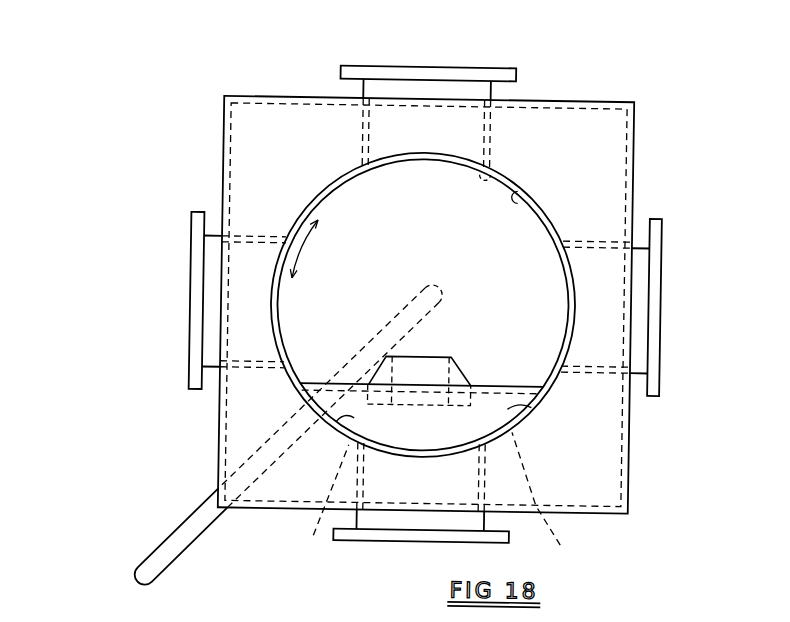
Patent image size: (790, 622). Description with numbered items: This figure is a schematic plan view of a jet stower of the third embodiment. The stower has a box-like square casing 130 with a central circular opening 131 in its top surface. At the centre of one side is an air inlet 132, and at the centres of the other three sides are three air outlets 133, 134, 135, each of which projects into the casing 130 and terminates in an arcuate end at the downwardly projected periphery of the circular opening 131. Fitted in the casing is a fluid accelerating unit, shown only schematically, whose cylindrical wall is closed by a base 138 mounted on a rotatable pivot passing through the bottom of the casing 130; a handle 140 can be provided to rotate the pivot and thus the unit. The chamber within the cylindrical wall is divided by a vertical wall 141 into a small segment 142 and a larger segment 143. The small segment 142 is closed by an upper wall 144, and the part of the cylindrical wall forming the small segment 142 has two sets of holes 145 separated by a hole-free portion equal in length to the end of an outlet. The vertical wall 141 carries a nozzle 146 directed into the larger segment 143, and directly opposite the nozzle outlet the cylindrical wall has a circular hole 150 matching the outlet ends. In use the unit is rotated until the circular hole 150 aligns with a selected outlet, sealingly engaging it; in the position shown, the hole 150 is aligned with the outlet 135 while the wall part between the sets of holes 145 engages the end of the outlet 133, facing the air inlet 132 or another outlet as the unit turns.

The casing 130 is at (613, 477).
The circular opening 131 is at (513, 197).
The air inlet 132 is at (197, 306).
The air outlet 133 is at (359, 542).
The air outlet 134 is at (653, 333).
The air outlet 135 is at (471, 77).
The base 138 is at (542, 231).
The handle 140 is at (171, 558).
The vertical wall 141 is at (538, 386).
The small segment 142 is at (352, 419).
The larger segment 143 is at (556, 296).
The upper wall 144 is at (529, 408).
The sets of holes 145 is at (445, 499).
The nozzle 146 is at (463, 371).
The circular hole 150 is at (498, 172).